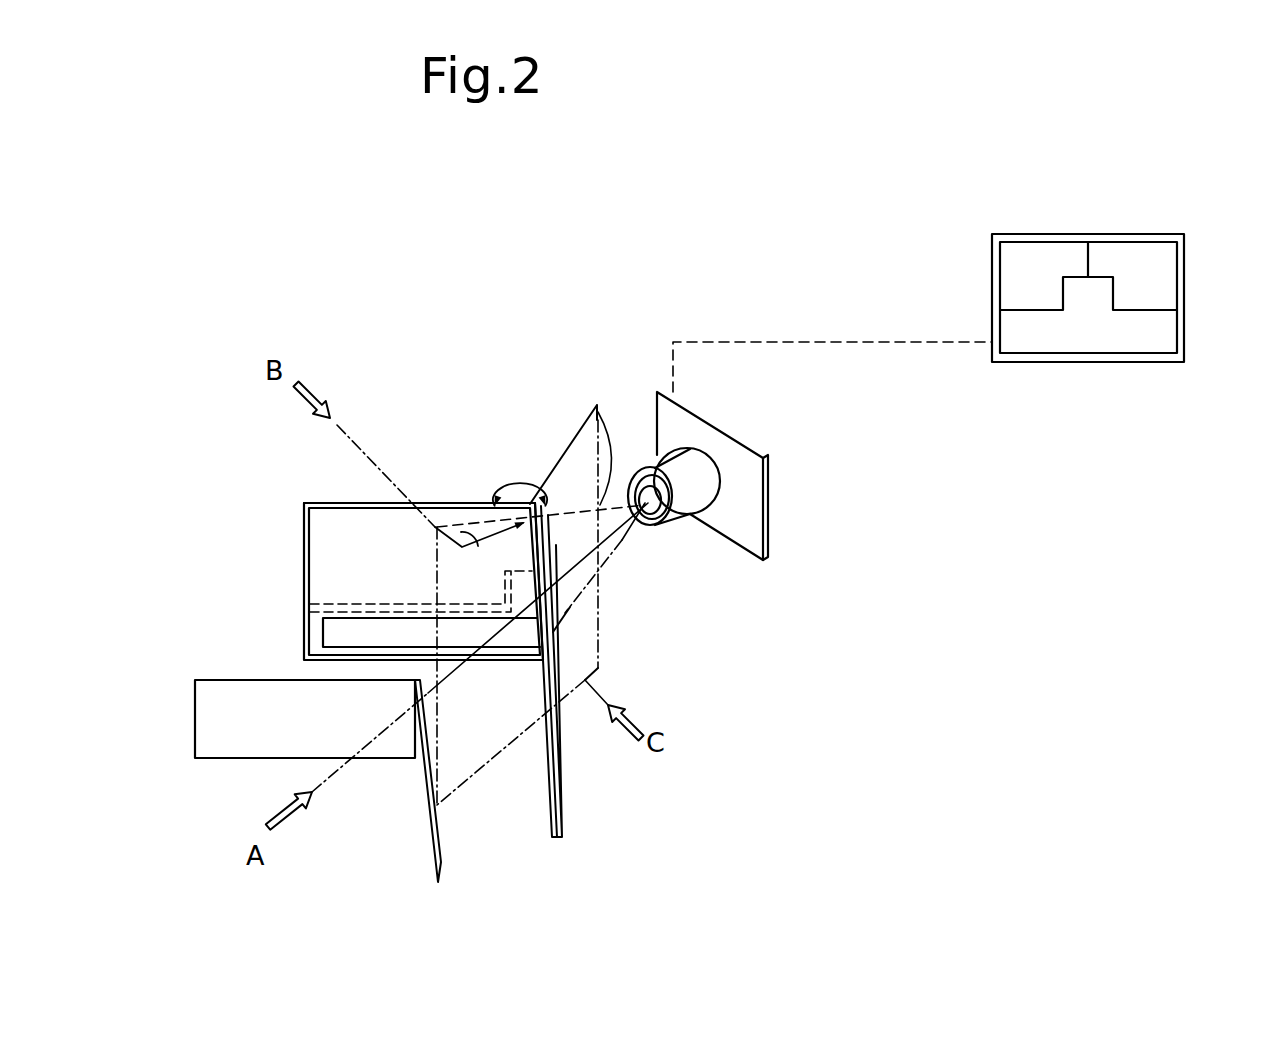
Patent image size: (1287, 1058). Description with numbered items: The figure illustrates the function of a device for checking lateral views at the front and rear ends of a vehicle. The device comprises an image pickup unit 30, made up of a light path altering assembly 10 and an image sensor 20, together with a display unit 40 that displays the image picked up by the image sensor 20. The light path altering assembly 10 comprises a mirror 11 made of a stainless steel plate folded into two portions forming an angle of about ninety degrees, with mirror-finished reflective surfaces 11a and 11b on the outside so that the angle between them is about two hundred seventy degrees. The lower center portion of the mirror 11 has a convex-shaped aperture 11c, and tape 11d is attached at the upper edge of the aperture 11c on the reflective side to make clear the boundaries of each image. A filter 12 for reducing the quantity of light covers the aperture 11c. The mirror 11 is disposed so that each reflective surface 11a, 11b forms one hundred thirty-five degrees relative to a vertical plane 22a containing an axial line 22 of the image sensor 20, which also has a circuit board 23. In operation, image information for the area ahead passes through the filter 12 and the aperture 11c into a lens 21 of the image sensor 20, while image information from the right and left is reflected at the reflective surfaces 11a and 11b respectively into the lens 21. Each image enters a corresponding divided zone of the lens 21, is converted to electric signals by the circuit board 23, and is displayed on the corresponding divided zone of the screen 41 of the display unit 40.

The light path altering assembly 10 is at (488, 422).
The mirror 11 is at (457, 497).
The reflective surface 11a is at (351, 503).
The reflective surface 11b is at (563, 608).
The aperture 11c is at (397, 628).
The tape 11d is at (350, 603).
The filter 12 is at (258, 707).
The image sensor 20 is at (680, 455).
The lens 21 is at (650, 508).
The axial line 22 is at (596, 406).
The vertical plane 22a is at (473, 772).
The circuit board 23 is at (768, 483).
The image pickup unit 30 is at (742, 675).
The display unit 40 is at (1115, 234).
The screen 41 is at (1160, 287).